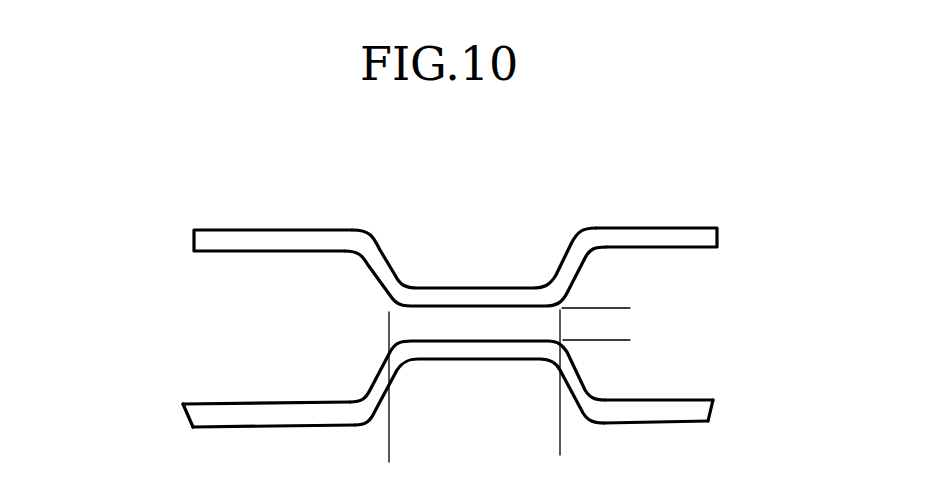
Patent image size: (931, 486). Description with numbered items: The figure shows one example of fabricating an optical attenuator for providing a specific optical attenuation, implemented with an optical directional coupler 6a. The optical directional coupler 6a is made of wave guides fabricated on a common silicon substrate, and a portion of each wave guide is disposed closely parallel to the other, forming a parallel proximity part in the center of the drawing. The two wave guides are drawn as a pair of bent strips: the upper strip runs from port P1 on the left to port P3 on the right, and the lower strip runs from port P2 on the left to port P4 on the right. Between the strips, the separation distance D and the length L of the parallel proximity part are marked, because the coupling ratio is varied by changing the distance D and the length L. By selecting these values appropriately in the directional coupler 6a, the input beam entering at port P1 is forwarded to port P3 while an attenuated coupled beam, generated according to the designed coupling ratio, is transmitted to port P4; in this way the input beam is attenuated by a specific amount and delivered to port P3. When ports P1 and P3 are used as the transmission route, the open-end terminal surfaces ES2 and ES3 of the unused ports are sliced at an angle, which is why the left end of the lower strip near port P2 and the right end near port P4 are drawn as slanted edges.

The optical directional coupler 6a is at (541, 207).
The port P1 is at (92, 243).
The port P2 is at (252, 398).
The port P3 is at (823, 238).
The port P4 is at (803, 415).
The open-end terminal surface ES2 is at (189, 417).
The open-end terminal surface ES3 is at (710, 412).
The separation distance D is at (608, 340).
The length L is at (560, 446).